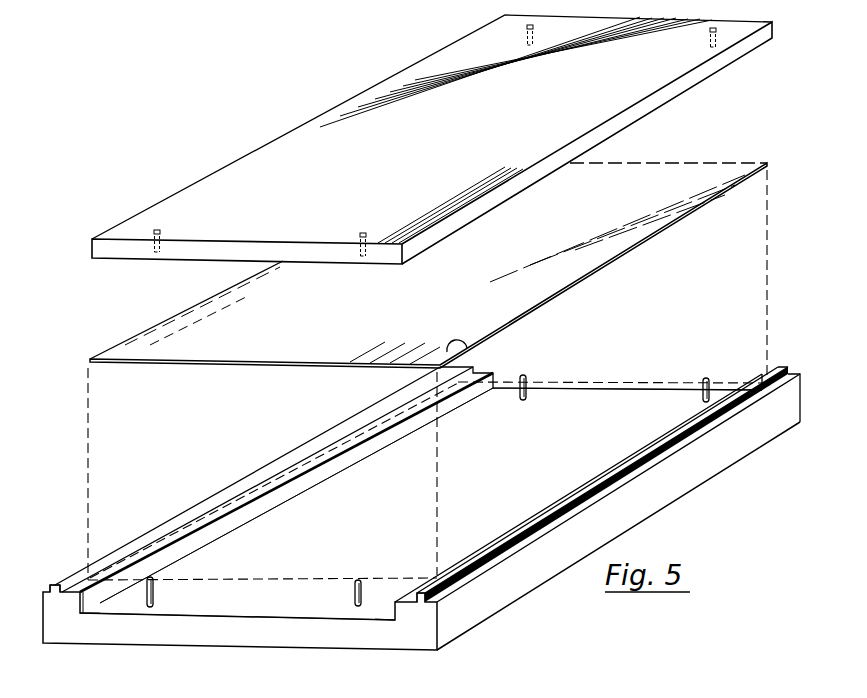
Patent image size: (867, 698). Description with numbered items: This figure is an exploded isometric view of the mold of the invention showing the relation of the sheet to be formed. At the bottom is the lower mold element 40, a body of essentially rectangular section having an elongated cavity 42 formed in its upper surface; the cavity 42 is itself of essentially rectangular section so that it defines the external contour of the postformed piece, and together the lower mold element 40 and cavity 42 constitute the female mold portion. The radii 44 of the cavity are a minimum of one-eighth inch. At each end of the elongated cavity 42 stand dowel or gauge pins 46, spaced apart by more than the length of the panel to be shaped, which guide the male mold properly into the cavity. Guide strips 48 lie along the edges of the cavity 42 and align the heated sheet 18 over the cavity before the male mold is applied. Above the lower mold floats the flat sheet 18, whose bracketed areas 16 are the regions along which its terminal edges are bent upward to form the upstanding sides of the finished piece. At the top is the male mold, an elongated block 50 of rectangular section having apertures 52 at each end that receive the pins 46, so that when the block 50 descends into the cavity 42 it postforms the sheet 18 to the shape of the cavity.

The bracketed areas 16 is at (465, 345).
The sheet 18 is at (670, 163).
The lower mold element 40 is at (665, 508).
The elongated cavity 42 is at (240, 608).
The radii 44 is at (100, 603).
The dowel or gauge pins 46 is at (706, 378).
The guide strips 48 is at (55, 585).
The elongated block 50 is at (352, 100).
The apertures 52 is at (530, 26).